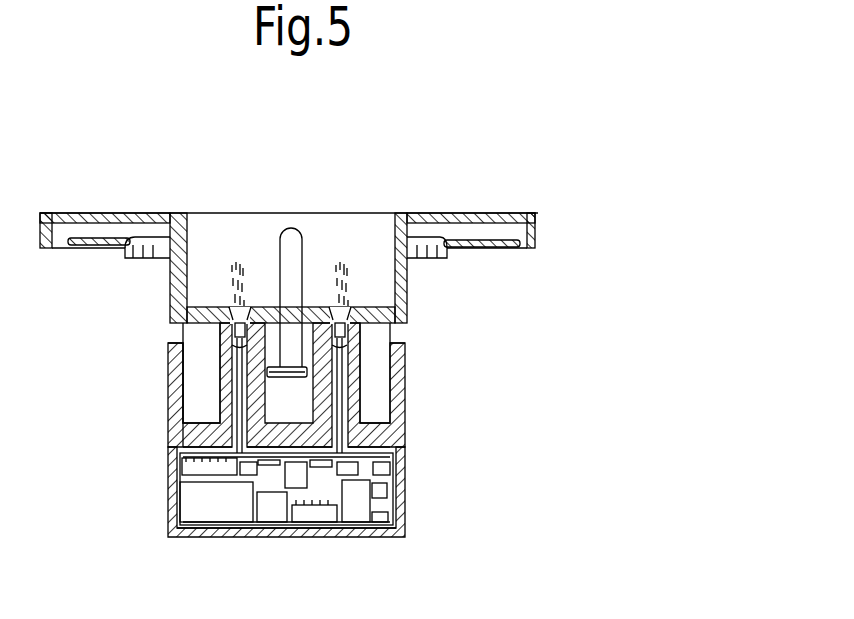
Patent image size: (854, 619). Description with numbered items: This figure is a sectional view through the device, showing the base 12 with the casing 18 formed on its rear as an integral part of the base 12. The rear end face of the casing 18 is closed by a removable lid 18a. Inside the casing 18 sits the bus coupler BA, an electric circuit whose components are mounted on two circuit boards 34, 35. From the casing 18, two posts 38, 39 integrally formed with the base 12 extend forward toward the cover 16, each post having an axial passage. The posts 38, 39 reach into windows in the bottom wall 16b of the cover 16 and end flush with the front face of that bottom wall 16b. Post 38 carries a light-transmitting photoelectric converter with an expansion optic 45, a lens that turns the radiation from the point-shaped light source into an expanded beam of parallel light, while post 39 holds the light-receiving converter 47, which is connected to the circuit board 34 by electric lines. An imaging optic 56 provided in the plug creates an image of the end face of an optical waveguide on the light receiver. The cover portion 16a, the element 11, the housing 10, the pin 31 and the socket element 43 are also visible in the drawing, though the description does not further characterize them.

The cover 16 is at (183, 253).
The flange 16a is at (477, 216).
The bottom wall 16b is at (373, 297).
The sensor mounting plate 11 is at (455, 250).
The sensor housing 10 is at (409, 392).
The base 12 is at (390, 442).
The casing 18 is at (396, 514).
The removable lid 18a is at (338, 537).
The actuating pin 31 is at (292, 234).
The circuit board 34 is at (178, 441).
The circuit board 35 is at (193, 525).
The post 38 is at (222, 367).
The post 39 is at (350, 379).
The gas outlet 43 is at (228, 331).
The expansion optic 45 is at (242, 305).
The converter 47 is at (406, 359).
The imaging optic 56 is at (338, 306).
The bus coupler BA is at (366, 490).